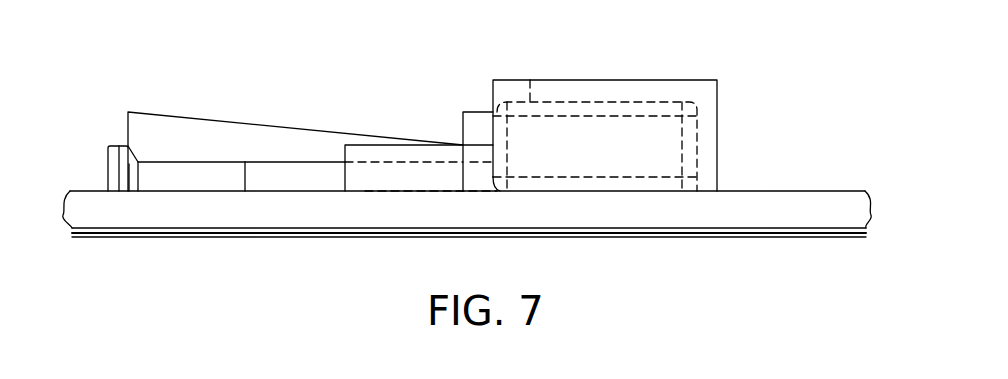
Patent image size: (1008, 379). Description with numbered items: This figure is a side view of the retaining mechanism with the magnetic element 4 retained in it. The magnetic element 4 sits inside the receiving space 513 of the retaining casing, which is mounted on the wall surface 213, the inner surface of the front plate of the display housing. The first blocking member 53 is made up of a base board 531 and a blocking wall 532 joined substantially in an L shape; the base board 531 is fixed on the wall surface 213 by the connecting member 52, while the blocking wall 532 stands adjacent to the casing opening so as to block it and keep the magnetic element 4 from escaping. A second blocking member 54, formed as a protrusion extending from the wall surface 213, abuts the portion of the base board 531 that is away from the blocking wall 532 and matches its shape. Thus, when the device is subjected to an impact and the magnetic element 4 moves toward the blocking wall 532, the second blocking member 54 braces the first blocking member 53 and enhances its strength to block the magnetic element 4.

The magnetic element 4 is at (523, 125).
The connecting member 52 is at (174, 191).
The first blocking member 53 is at (259, 118).
The second blocking member 54 is at (106, 165).
The wall surface 213 is at (828, 194).
The receiving space 513 is at (683, 183).
The base board 531 is at (293, 173).
The blocking wall 532 is at (477, 111).